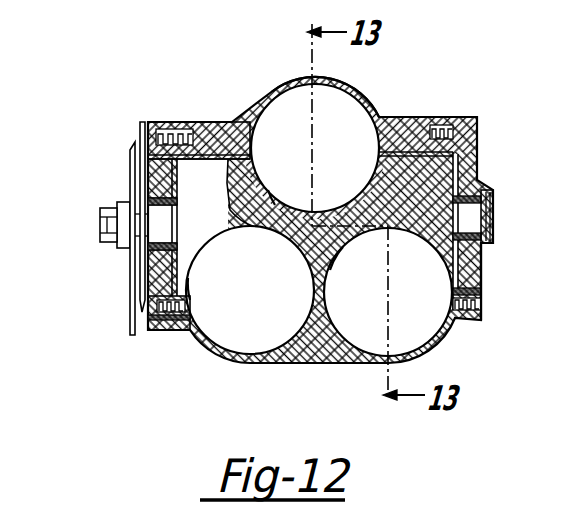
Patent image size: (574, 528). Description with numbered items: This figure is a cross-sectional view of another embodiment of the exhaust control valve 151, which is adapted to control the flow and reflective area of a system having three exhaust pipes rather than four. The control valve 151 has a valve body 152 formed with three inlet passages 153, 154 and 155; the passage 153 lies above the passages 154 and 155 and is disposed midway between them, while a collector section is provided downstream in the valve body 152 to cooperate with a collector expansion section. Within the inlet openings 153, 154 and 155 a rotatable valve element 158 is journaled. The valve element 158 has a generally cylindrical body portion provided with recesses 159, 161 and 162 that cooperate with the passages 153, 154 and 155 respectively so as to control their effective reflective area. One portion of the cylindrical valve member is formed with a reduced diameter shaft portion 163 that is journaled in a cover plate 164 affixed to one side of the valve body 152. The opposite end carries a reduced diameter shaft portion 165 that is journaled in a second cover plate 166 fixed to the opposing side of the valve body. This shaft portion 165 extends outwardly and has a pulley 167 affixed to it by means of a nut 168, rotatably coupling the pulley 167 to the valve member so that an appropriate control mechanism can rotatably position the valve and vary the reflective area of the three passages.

The control valve 151 is at (427, 103).
The valve body 152 is at (342, 93).
The inlet passage 153 is at (315, 148).
The inlet passage 154 is at (250, 290).
The inlet passage 155 is at (388, 292).
The rotatable valve element 158 is at (208, 175).
The recess 159 is at (272, 200).
The recess 161 is at (196, 266).
The recess 162 is at (352, 290).
The reduced diameter shaft portion 163 is at (494, 214).
The cover plate 164 is at (482, 268).
The reduced diameter shaft portion 165 is at (152, 237).
The second cover plate 166 is at (158, 331).
The pulley 167 is at (132, 287).
The nut 168 is at (100, 226).